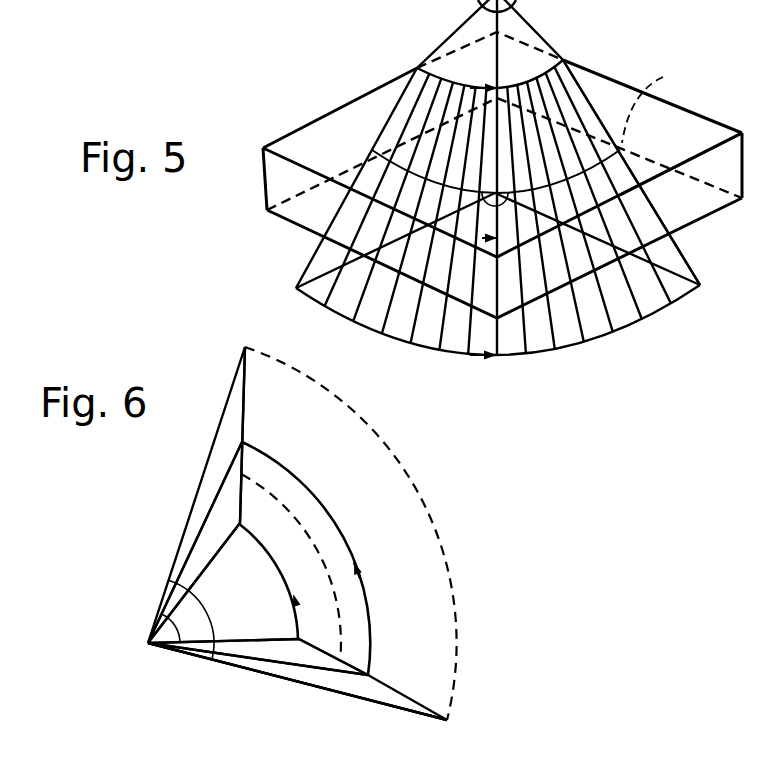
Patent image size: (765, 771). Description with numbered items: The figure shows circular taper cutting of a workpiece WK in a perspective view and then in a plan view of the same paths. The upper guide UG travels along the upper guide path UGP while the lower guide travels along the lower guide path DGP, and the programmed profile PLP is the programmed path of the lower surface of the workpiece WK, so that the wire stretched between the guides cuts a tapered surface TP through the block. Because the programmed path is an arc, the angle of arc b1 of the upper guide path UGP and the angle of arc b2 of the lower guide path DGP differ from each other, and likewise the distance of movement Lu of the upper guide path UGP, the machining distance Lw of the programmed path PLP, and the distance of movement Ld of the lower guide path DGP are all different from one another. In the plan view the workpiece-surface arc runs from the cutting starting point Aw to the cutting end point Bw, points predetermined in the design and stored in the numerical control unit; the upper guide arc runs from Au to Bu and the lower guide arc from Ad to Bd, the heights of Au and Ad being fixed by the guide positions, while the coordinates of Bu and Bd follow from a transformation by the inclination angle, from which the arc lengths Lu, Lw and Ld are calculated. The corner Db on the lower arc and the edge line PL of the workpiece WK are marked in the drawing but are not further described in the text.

In FIG. 5, the upper guide UG is at (417, 68).
In FIG. 5, the upper guide path UGP is at (563, 60).
In FIG. 6, the upper guide path UGP is at (302, 537).
In FIG. 5, the lower guide path DGP is at (690, 298).
In FIG. 6, the lower guide path DGP is at (418, 473).
In FIG. 5, the lower boundary corner point Db is at (296, 288).
In FIG. 5, the workpiece WK is at (718, 180).
In FIG. 5, the tapered surface TP is at (661, 102).
In FIG. 6, the tapered surface TP is at (353, 658).
In FIG. 5, the pitch line / plane PL is at (636, 192).
In FIG. 5, the angle of arc of the lower guide path b2 is at (500, 193).
In FIG. 6, the angle of arc of the lower guide path b2 is at (207, 619).
In FIG. 6, the angle of arc of the upper guide path b1 is at (189, 627).
In FIG. 5, the distance of movement of the upper guide path Lu is at (479, 74).
In FIG. 6, the distance of movement of the upper guide path Lu is at (281, 581).
In FIG. 5, the machining distance of the programmed path Lw is at (509, 227).
In FIG. 6, the machining distance of the programmed path Lw is at (370, 552).
In FIG. 5, the distance of movement of the lower guide path Ld is at (492, 376).
In FIG. 6, the distance of movement of the lower guide path Ld is at (315, 621).
In FIG. 6, the programmed profile PLP is at (323, 500).
In FIG. 6, the cutting end point on the lower guide path Bd is at (244, 418).
In FIG. 6, the cutting end point on the programmed path Bw is at (220, 527).
In FIG. 6, the cutting end point on the upper guide path Bu is at (214, 570).
In FIG. 6, the cutting starting point on the upper guide path Au is at (244, 627).
In FIG. 6, the cutting starting point on the programmed path Aw is at (281, 662).
In FIG. 6, the cutting starting point on the lower guide path Ad is at (317, 693).